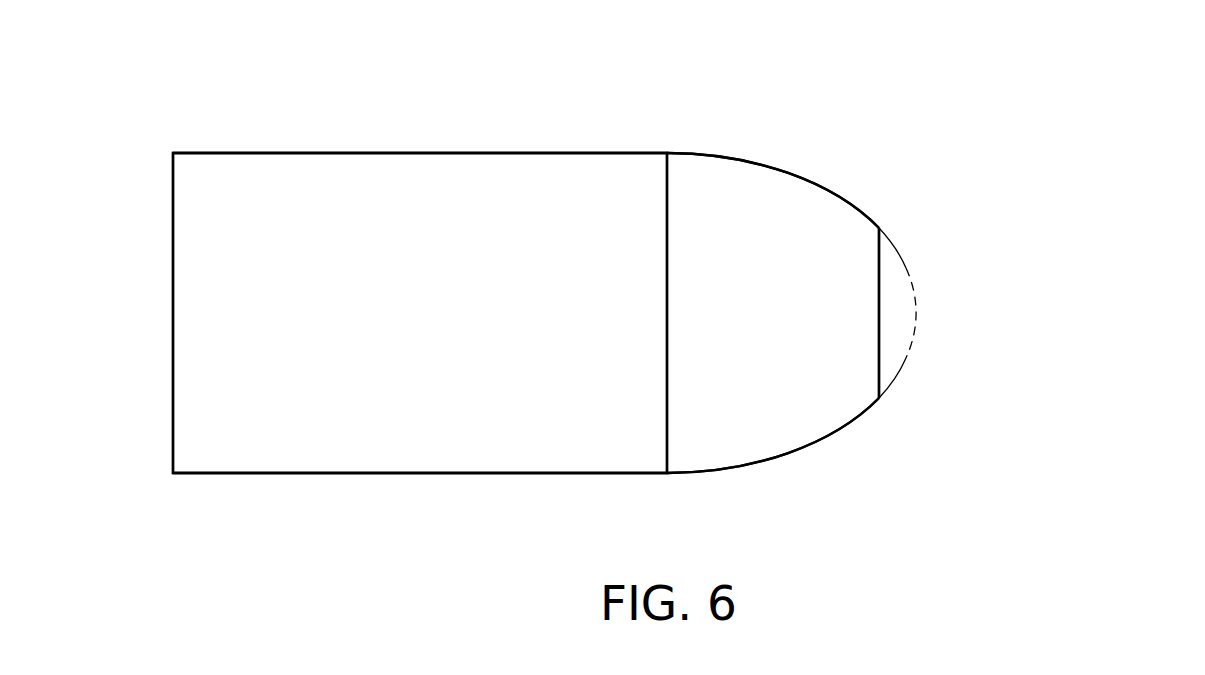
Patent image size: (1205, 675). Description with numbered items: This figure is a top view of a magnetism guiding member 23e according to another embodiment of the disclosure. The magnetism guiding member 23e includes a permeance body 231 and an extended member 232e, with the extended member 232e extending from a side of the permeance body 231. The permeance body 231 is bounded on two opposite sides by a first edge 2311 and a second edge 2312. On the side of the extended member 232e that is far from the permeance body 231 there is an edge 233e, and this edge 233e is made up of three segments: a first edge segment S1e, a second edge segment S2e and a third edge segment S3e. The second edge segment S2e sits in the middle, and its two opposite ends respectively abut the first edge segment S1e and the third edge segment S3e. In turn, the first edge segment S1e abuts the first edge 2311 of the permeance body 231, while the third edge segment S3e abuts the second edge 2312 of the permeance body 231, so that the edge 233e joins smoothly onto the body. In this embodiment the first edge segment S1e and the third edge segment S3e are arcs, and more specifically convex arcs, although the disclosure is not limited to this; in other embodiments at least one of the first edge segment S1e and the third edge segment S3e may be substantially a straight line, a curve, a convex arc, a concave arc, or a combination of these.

The magnetism guiding member 23e is at (157, 92).
The permeance body 231 is at (327, 424).
The first edge 2311 is at (447, 152).
The second edge 2312 is at (446, 474).
The extended member 232e is at (748, 442).
The edge 233e is at (1098, 248).
The first edge segment S1e is at (831, 191).
The second edge segment S2e is at (879, 347).
The third edge segment S3e is at (832, 435).